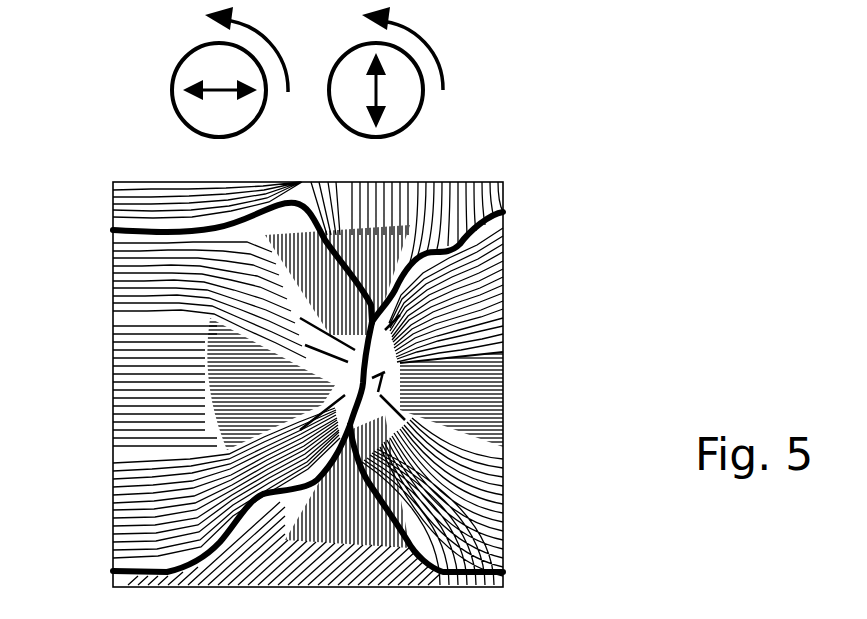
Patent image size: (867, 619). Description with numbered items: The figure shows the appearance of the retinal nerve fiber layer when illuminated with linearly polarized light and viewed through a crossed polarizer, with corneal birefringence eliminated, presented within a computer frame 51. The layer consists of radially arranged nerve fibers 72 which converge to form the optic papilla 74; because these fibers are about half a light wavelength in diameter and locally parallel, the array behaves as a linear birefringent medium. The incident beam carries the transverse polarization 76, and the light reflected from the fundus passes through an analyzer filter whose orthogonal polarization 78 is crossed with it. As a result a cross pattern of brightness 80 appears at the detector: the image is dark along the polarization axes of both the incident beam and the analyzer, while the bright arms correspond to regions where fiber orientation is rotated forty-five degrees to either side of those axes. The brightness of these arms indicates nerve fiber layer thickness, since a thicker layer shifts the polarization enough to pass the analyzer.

The computer frame 51 is at (135, 373).
The radially arranged nerve fibers 72 is at (455, 495).
The optic papilla 74 is at (420, 360).
The polarization of the incident beam 76 is at (197, 117).
The polarization of the analyzer filter 78 is at (360, 112).
The cross pattern of brightness 80 is at (255, 297).